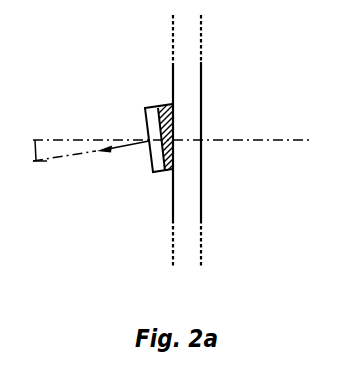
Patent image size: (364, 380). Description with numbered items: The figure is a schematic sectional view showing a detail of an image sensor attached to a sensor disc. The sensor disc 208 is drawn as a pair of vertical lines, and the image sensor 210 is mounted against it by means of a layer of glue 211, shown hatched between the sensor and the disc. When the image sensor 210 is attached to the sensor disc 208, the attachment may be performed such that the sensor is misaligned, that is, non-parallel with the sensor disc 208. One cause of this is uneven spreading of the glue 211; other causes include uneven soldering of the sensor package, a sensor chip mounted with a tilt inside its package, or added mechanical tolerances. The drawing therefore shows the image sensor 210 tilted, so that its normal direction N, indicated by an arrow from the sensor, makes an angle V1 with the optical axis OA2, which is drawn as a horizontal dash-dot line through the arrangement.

The sensor disc 208 is at (201, 78).
The image sensor 210 is at (167, 170).
The glue 211 is at (160, 106).
The optical axis OA2 is at (258, 141).
The normal direction N is at (115, 149).
The tilt angle V1 is at (35, 160).